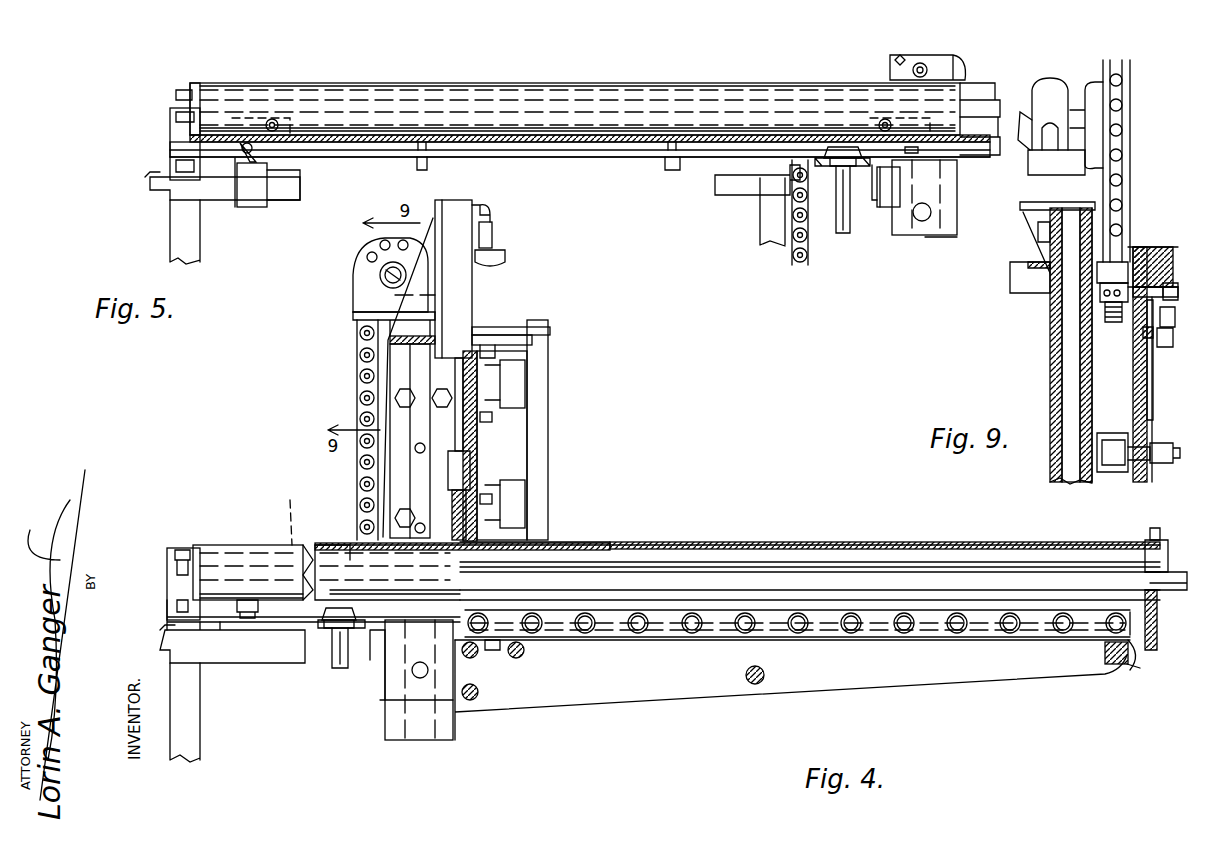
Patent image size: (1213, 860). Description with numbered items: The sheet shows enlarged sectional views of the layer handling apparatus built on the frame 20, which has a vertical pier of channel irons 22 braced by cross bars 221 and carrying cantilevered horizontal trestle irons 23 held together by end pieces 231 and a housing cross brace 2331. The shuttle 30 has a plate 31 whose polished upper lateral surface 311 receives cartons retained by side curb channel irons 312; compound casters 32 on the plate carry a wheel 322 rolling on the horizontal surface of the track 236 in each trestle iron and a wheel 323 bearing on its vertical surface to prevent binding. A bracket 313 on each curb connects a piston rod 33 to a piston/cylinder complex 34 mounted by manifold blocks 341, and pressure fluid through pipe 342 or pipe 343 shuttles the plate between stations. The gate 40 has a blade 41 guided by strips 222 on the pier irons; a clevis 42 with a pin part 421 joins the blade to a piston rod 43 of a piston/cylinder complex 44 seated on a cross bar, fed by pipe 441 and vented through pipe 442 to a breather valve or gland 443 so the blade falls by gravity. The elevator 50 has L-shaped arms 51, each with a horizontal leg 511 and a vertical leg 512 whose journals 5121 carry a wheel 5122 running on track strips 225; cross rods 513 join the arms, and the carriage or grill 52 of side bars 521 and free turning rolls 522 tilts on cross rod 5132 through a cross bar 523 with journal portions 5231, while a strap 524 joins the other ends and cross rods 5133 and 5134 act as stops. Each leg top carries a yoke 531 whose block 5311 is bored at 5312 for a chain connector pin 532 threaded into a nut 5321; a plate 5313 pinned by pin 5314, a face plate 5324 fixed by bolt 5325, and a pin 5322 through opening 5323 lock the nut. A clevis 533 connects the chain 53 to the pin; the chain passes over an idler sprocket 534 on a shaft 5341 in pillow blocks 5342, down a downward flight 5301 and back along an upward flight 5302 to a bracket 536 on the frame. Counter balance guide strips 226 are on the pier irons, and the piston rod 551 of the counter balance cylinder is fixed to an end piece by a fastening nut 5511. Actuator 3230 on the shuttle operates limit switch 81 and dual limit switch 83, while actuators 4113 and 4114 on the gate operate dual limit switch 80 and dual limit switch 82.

In FIG. 4, the frame 20 is at (435, 760).
In FIG. 5, the pier irons 22 is at (900, 228).
In FIG. 4, the pier irons 22 is at (448, 742).
In FIG. 9, the pier irons 22 is at (1082, 364).
In FIG. 5, the trestle irons 23 is at (172, 118).
In FIG. 4, the trestle irons 23 is at (170, 572).
In FIG. 5, the shuttle 30 is at (468, 115).
In FIG. 4, the shuttle 30 is at (242, 531).
In FIG. 5, the plate 31 is at (330, 122).
In FIG. 4, the plate 31 is at (243, 598).
In FIG. 5, the compound casters 32 is at (250, 118).
In FIG. 5, the piston rod 33 is at (630, 100).
In FIG. 4, the piston rod 33 is at (285, 515).
In FIG. 4, the piston/cylinder complex 34 is at (670, 560).
In FIG. 4, the gate 40 is at (428, 499).
In FIG. 4, the blade 41 is at (512, 482).
In FIG. 4, the clevis 42 is at (460, 456).
In FIG. 4, the piston rod 43 is at (460, 384).
In FIG. 4, the piston/cylinder complex 44 is at (455, 295).
In FIG. 4, the elevator 50 is at (603, 720).
In FIG. 4, the arms 51 is at (683, 672).
In FIG. 9, the arms 51 is at (1150, 472).
In FIG. 4, the carriage or grill 52 is at (768, 597).
In FIG. 5, the chain 53 is at (928, 67).
In FIG. 4, the chain 53 is at (358, 265).
In FIG. 9, the chain 53 is at (1132, 128).
In FIG. 4, the dual limit switch 80 is at (512, 388).
In FIG. 5, the limit switch 81 is at (890, 192).
In FIG. 4, the dual limit switch 82 is at (512, 516).
In FIG. 5, the dual limit switch 83 is at (252, 192).
In FIG. 4, the cross bars 221 is at (430, 338).
In FIG. 9, the cross bars 221 is at (1022, 282).
In FIG. 9, the strips 222 is at (1072, 418).
In FIG. 4, the track strips 225 is at (420, 750).
In FIG. 9, the track strips 225 is at (1103, 410).
In FIG. 4, the strips 226 is at (405, 388).
In FIG. 5, the end pieces 231 is at (152, 182).
In FIG. 4, the end pieces 231 is at (1175, 628).
In FIG. 5, the track 236 is at (200, 143).
In FIG. 4, the track 236 is at (313, 632).
In FIG. 5, the upper lateral surface 311 is at (390, 134).
In FIG. 4, the upper lateral surface 311 is at (265, 596).
In FIG. 5, the channel irons 312 is at (525, 84).
In FIG. 5, the bracket 313 is at (198, 83).
In FIG. 5, the wheel 322 is at (282, 112).
In FIG. 5, the wheel 323 is at (930, 165).
In FIG. 4, the wheel 323 is at (250, 618).
In FIG. 4, the manifold blocks 341 is at (342, 548).
In FIG. 4, the pipe 342 is at (1147, 532).
In FIG. 4, the pipe 343 is at (352, 532).
In FIG. 4, the pin part 421 is at (455, 492).
In FIG. 4, the pipe 441 is at (490, 332).
In FIG. 4, the pipe 442 is at (492, 210).
In FIG. 4, the breather valve or gland 443 is at (494, 232).
In FIG. 4, the leg 511 is at (920, 672).
In FIG. 9, the leg 512 is at (1150, 436).
In FIG. 4, the cross rods 513 is at (760, 680).
In FIG. 4, the side bars 521 is at (822, 616).
In FIG. 4, the rolls 522 is at (908, 616).
In FIG. 4, the cross bar 523 is at (1135, 658).
In FIG. 4, the strap 524 is at (493, 650).
In FIG. 9, the yoke 531 is at (1142, 245).
In FIG. 9, the chain connector pin 532 is at (1105, 288).
In FIG. 9, the clevis 533 is at (1128, 232).
In FIG. 9, the idler sprocket 534 is at (1120, 86).
In FIG. 5, the bracket 536 is at (798, 182).
In FIG. 5, the piston rod 551 is at (843, 236).
In FIG. 4, the piston rod 551 is at (338, 670).
In FIG. 5, the housing cross brace 2331 is at (185, 240).
In FIG. 4, the housing cross brace 2331 is at (182, 748).
In FIG. 5, the actuator 3230 is at (262, 150).
In FIG. 4, the actuator 4113 is at (495, 418).
In FIG. 4, the actuator 4114 is at (495, 498).
In FIG. 9, the journals 5121 is at (1150, 465).
In FIG. 5, the wheel 5122 is at (925, 240).
In FIG. 4, the wheel 5122 is at (400, 700).
In FIG. 9, the wheel 5122 is at (1115, 455).
In FIG. 4, the cross rod 5132 is at (1105, 670).
In FIG. 4, the cross rod 5133 is at (475, 658).
In FIG. 4, the cross rod 5134 is at (524, 655).
In FIG. 4, the journal portions 5231 is at (1122, 672).
In FIG. 4, the downward flight 5301 is at (362, 380).
In FIG. 5, the upward flight 5302 is at (795, 258).
In FIG. 9, the block 5311 is at (1152, 250).
In FIG. 9, the bore 5312 is at (1100, 285).
In FIG. 9, the plate 5313 is at (1143, 330).
In FIG. 9, the pin 5314 is at (1147, 350).
In FIG. 9, the nut 5321 is at (1105, 300).
In FIG. 9, the pin 5322 is at (1175, 290).
In FIG. 9, the opening 5323 is at (1168, 262).
In FIG. 9, the face plate 5324 is at (1168, 348).
In FIG. 9, the bolt 5325 is at (1170, 328).
In FIG. 4, the shaft 5341 is at (385, 280).
In FIG. 9, the shaft 5341 is at (1025, 120).
In FIG. 4, the pillow blocks 5342 is at (388, 296).
In FIG. 9, the pillow blocks 5342 is at (1052, 112).
In FIG. 5, the bolt head 5511 is at (843, 146).
In FIG. 4, the bolt head 5511 is at (326, 640).